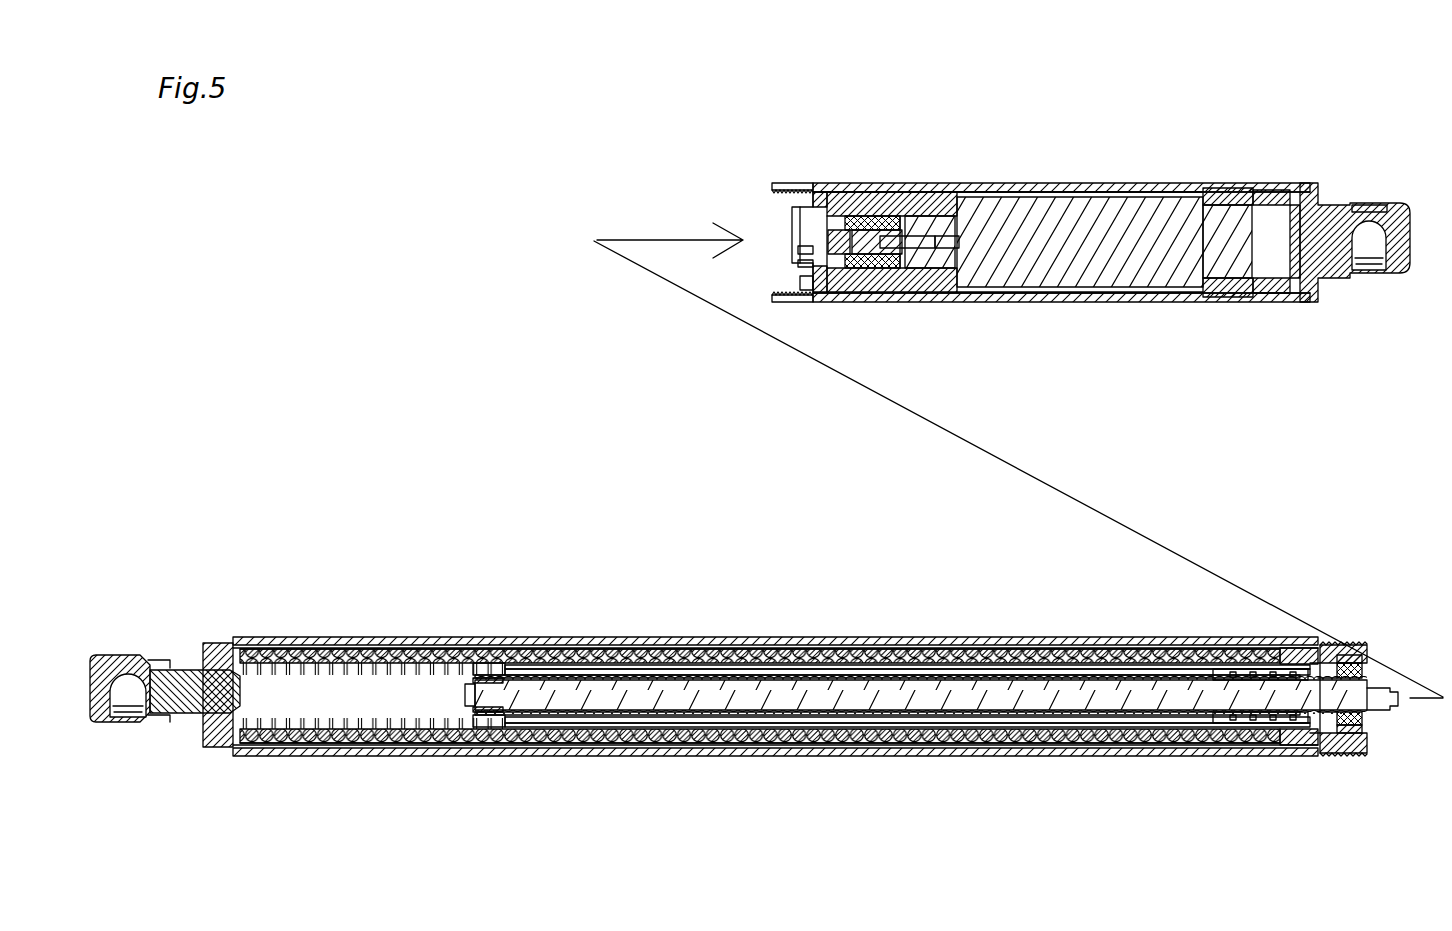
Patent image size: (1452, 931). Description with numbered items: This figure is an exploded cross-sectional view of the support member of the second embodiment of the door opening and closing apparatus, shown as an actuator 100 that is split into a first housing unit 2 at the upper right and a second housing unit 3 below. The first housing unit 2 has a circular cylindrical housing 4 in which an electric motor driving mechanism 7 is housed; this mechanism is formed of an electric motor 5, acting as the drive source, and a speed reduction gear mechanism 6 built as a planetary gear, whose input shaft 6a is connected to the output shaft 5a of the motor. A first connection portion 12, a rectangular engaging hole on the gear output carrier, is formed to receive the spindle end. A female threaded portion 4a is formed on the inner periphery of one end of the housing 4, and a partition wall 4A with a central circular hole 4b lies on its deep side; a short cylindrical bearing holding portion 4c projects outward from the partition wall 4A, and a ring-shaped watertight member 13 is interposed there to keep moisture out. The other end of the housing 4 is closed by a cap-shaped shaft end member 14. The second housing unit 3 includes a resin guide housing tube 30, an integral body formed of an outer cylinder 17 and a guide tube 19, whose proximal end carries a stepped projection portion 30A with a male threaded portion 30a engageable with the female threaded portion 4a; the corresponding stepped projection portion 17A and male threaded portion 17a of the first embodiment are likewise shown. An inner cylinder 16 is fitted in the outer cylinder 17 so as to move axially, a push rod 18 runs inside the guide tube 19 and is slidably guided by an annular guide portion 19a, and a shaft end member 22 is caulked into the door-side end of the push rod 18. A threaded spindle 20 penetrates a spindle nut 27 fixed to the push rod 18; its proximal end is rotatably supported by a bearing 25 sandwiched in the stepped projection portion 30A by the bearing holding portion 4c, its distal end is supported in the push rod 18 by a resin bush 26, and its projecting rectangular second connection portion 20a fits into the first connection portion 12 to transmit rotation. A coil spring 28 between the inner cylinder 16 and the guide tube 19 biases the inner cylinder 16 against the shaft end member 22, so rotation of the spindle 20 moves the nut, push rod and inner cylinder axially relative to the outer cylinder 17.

The first housing unit 2 is at (1108, 148).
The electric actuator 100 is at (1051, 237).
The second housing unit 3 is at (793, 580).
The housing 4 is at (1175, 183).
The female threaded portion 4a is at (773, 192).
The circular hole 4b is at (798, 250).
The bearing holding portion 4c is at (793, 268).
The partition wall 4A is at (793, 284).
The electric motor 5 is at (1031, 210).
The output shaft 5a is at (924, 250).
The speed reduction gear mechanism 6 is at (908, 208).
The input shaft 6a is at (893, 292).
The electric motor driving mechanism 7 is at (1050, 130).
The first connection portion 12 is at (838, 270).
The watertight member 13 is at (806, 203).
The shaft end member 14 is at (1331, 270).
The inner cylinder 16 is at (317, 637).
The outer cylinder 17 is at (538, 637).
The stepped projection portion 17A is at (1356, 650).
The male threaded portion 17a is at (1362, 753).
The push rod 18 is at (690, 674).
The guide tube 19 is at (618, 666).
The guide portion 19a is at (613, 722).
The spindle 20 is at (810, 703).
The second connection portion 20a is at (1388, 704).
The shaft end member 22 is at (160, 722).
The bearing 25 is at (1347, 737).
The resin bush 26 is at (492, 677).
The spindle nut 27 is at (1232, 671).
The coil spring 28 is at (692, 742).
The guide housing tube 30 is at (948, 636).
The male threaded portion 30a is at (1350, 663).
The stepped projection portion 30A is at (1340, 727).